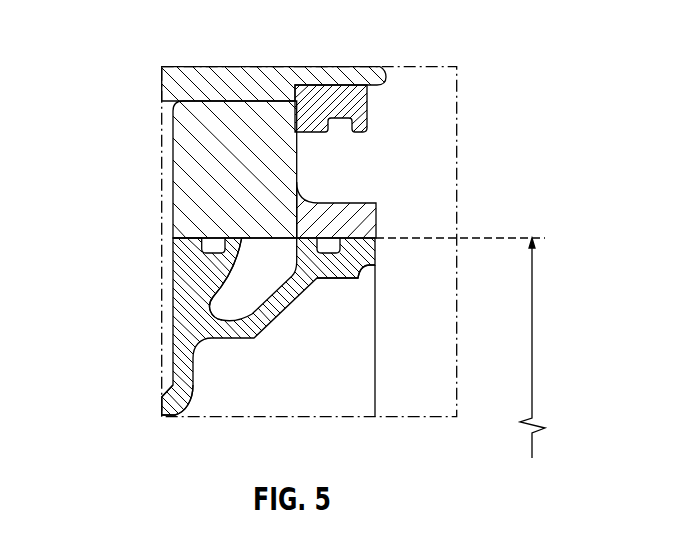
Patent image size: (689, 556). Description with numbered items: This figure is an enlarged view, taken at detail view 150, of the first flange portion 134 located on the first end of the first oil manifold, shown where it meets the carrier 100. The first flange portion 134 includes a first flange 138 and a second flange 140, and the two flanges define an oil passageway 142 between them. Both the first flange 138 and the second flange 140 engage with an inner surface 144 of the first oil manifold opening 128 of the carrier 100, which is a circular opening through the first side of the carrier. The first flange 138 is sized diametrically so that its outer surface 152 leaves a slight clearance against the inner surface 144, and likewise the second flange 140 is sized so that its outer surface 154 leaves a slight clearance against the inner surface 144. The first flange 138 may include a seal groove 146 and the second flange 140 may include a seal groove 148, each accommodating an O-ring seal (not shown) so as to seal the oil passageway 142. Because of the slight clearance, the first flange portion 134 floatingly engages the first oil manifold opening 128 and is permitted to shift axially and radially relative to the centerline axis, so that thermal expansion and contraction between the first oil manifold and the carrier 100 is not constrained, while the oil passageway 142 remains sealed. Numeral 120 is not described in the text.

The detail view 150 is at (430, 32).
The carrier 100 is at (208, 162).
The seal groove 148 is at (210, 236).
The outer surface 154 is at (187, 230).
The second flange 140 is at (183, 274).
The oil passageway 142 is at (237, 300).
The flange foot 120 is at (173, 385).
The outer surface 152 is at (305, 232).
The seal groove 146 is at (336, 235).
The first flange 138 is at (350, 261).
The first oil manifold opening 128 is at (533, 315).
The inner surface 144 is at (263, 244).
The first flange portion 134 is at (352, 341).